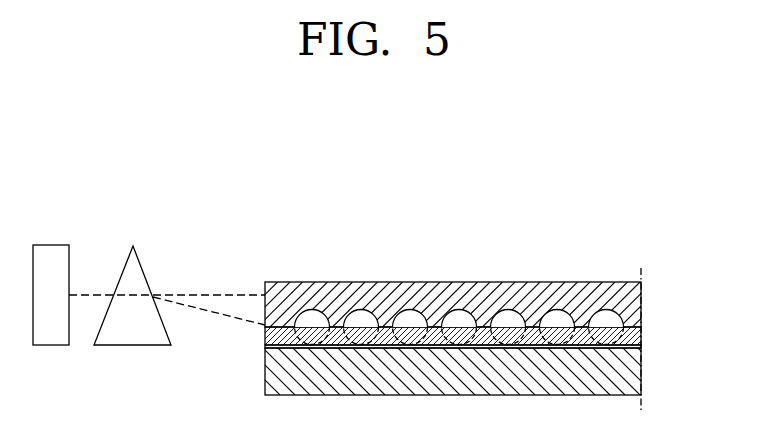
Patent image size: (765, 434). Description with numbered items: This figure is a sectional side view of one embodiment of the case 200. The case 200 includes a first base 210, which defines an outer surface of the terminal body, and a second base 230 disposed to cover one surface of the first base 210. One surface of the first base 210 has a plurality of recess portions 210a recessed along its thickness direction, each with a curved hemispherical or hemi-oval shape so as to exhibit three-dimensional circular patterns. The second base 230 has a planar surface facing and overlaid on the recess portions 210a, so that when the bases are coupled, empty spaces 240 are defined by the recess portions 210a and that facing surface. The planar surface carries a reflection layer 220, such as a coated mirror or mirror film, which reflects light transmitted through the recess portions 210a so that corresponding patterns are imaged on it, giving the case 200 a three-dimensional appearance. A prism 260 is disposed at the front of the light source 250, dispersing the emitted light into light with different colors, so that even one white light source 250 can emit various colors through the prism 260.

The case 200 is at (471, 300).
The first base 210 is at (632, 295).
The recess portions 210a is at (575, 314).
The reflection layer 220 is at (632, 342).
The second base 230 is at (632, 377).
The empty spaces 240 is at (606, 318).
The light source 250 is at (52, 335).
The prism 260 is at (135, 335).